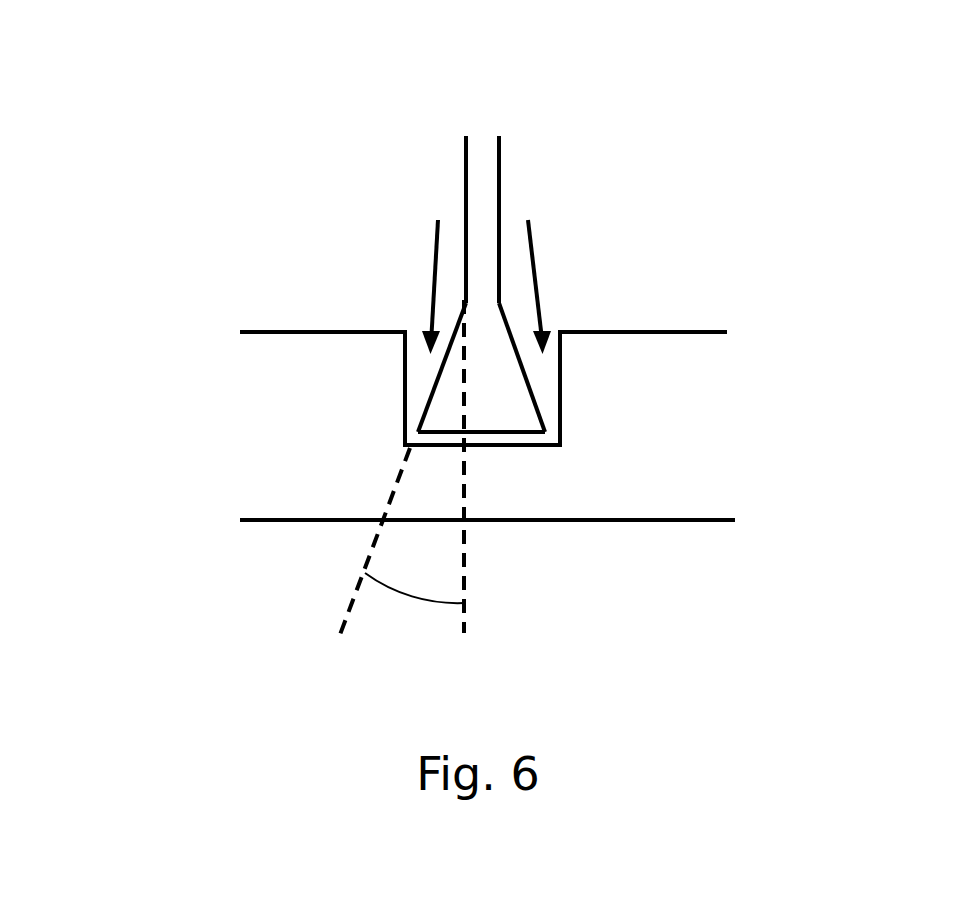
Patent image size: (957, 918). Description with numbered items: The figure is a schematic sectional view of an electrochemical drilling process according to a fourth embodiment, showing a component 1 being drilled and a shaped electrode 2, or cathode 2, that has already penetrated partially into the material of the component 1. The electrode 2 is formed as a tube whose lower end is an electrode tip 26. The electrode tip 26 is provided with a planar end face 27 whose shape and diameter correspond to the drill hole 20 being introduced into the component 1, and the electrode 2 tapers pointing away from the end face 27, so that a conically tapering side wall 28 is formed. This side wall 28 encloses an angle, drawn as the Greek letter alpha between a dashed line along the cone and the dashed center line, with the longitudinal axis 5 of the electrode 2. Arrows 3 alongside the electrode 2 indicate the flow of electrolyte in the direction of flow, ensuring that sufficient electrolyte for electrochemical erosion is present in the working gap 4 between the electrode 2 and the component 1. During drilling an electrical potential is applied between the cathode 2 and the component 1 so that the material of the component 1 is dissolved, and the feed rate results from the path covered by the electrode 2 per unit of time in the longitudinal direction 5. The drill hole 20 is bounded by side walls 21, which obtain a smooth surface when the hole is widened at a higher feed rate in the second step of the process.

The component 1 is at (673, 353).
The electrode 2 is at (462, 192).
The gas flow 3 is at (430, 268).
The working gap 4 is at (552, 438).
The longitudinal axis 5 is at (467, 635).
The drill hole 20 is at (405, 447).
The side wall 21 is at (405, 372).
The electrode tip 26 is at (490, 399).
The end face 27 is at (518, 433).
The side wall 28 is at (427, 385).